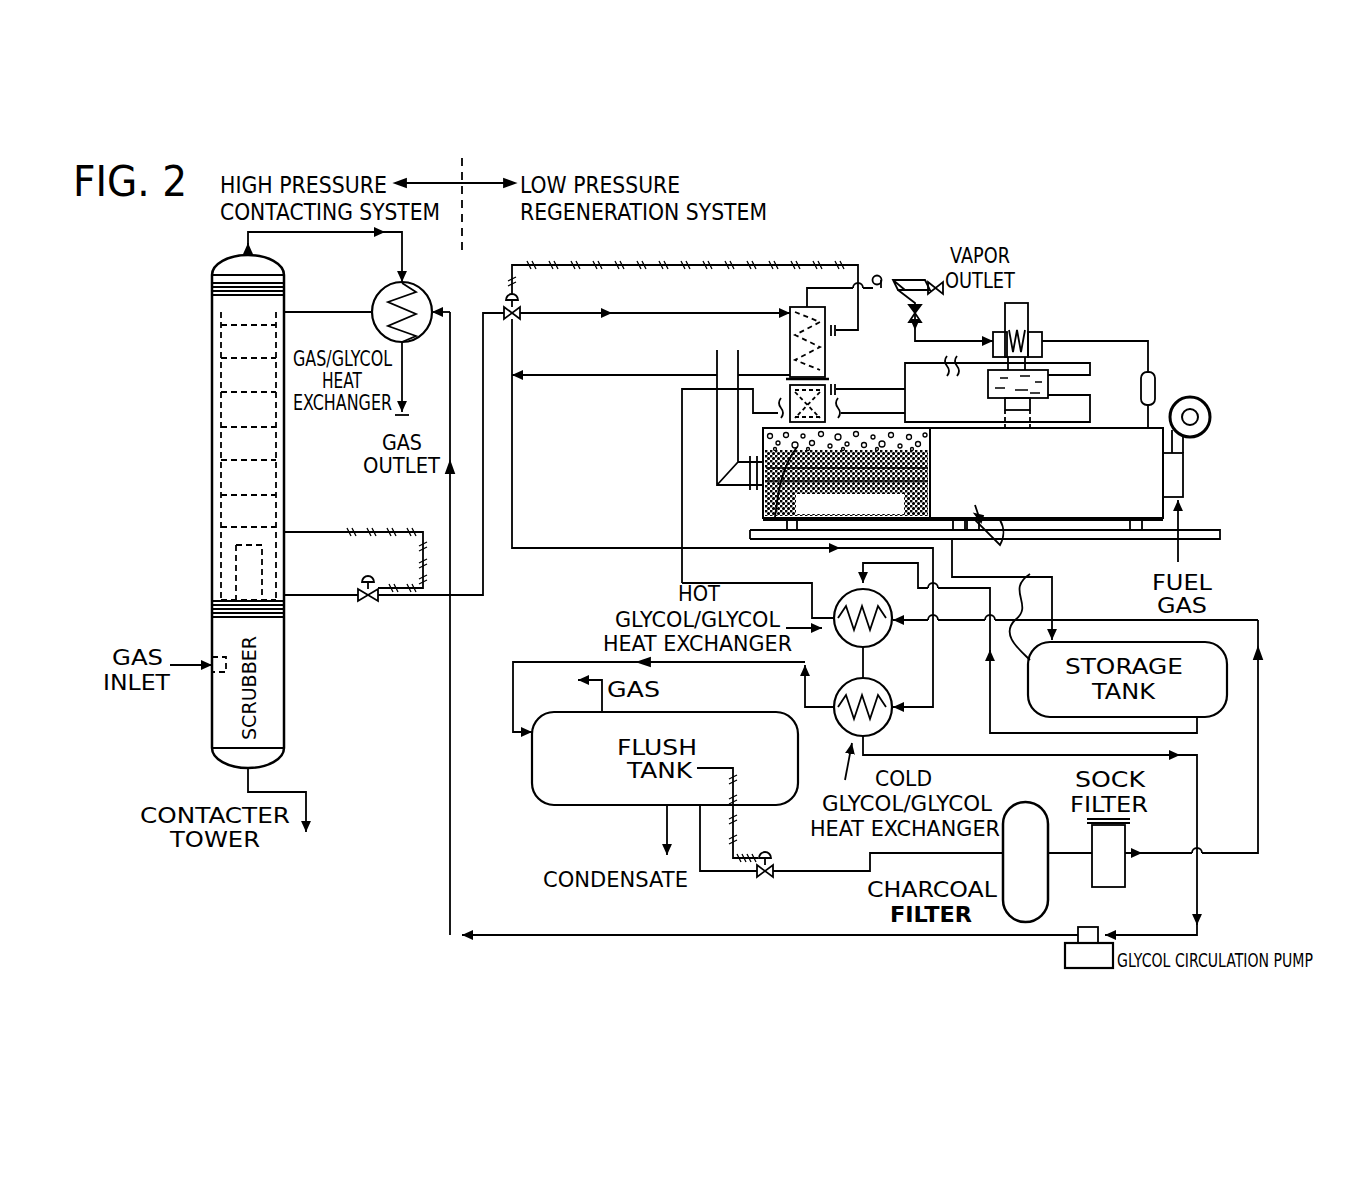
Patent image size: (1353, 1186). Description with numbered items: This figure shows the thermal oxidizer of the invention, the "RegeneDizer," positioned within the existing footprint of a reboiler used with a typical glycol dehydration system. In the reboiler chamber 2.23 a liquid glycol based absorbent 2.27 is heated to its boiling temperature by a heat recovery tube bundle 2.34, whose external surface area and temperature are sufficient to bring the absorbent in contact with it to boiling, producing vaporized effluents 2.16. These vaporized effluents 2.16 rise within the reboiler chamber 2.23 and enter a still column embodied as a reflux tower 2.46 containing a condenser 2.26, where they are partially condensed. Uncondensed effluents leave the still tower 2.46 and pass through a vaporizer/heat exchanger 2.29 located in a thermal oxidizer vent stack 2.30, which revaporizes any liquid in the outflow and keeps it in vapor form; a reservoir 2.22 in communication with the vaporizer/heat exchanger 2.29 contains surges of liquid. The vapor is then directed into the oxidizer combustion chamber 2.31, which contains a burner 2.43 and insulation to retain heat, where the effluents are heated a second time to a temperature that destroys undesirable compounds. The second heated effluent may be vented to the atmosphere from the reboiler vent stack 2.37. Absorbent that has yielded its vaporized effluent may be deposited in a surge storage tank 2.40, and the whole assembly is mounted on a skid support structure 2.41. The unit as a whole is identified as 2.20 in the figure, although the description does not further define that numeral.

The vaporized effluents 2.16 is at (787, 447).
The skid mounted regeneration unit 2.20 is at (1083, 553).
The reservoir 2.22 is at (1042, 334).
The reboiler chamber 2.23 is at (840, 520).
The condenser 2.26 is at (792, 337).
The liquid glycol based absorbent 2.27 is at (775, 488).
The vaporizer/heat exchanger 2.29 is at (1022, 340).
The thermal oxidizer vent stack 2.30 is at (1010, 305).
The oxidizer combustion chamber 2.31 is at (1120, 487).
The heat recovery tube bundle 2.34 is at (766, 520).
The reboiler vent stack 2.37 is at (725, 365).
The surge storage tank 2.40 is at (1006, 543).
The skid support structure 2.41 is at (1222, 538).
The burner 2.43 is at (1183, 465).
The still column / reflux tower 2.46 is at (790, 362).